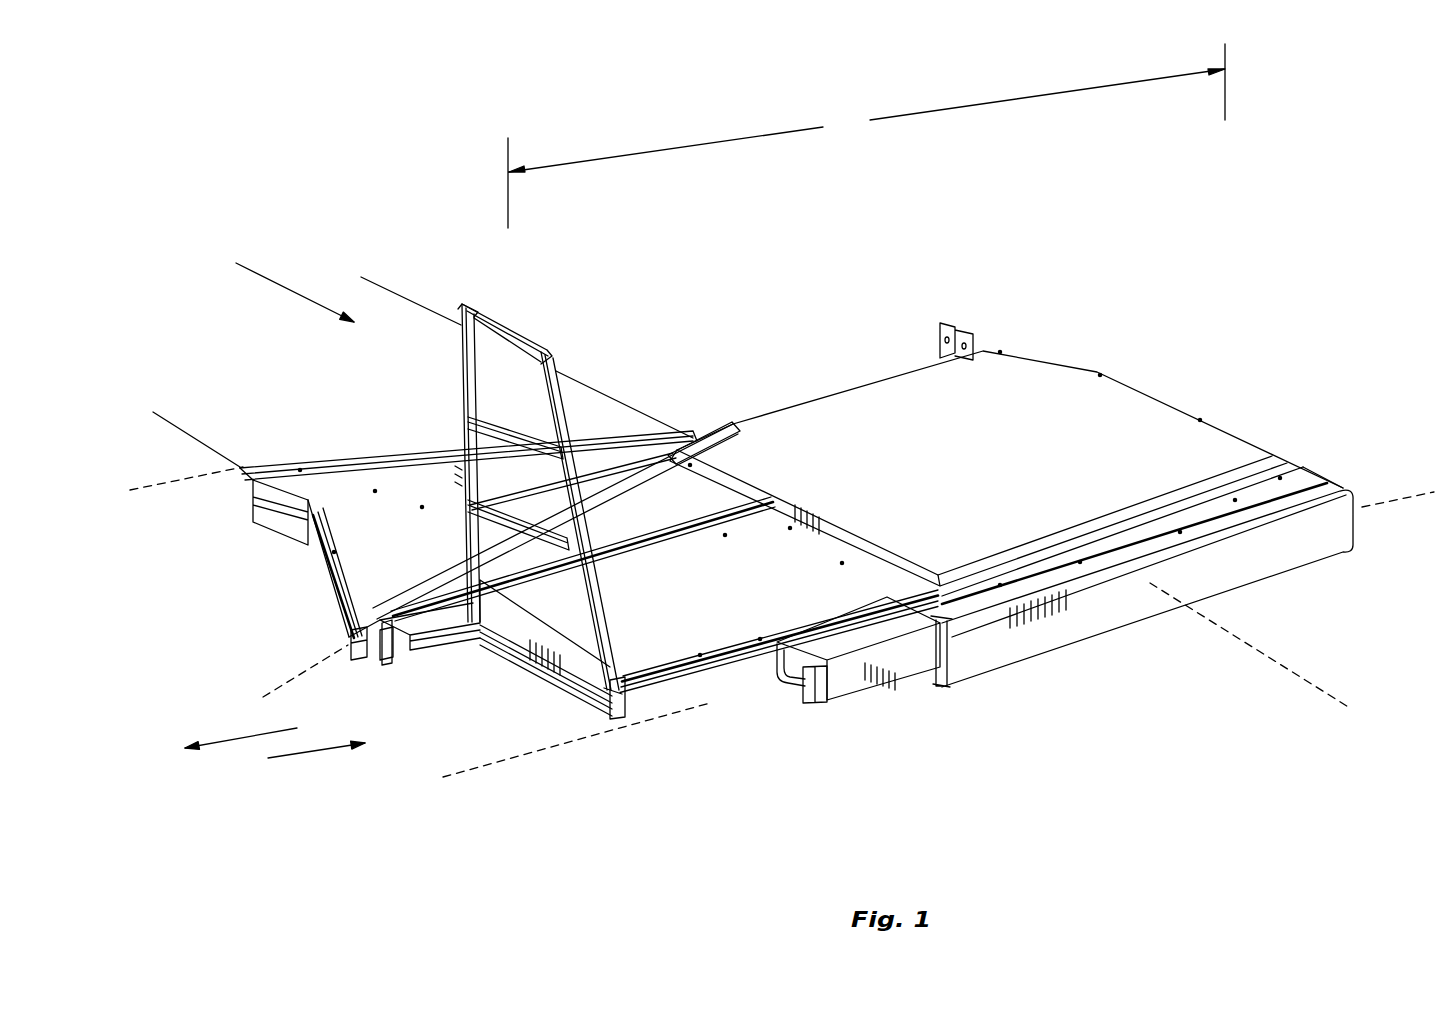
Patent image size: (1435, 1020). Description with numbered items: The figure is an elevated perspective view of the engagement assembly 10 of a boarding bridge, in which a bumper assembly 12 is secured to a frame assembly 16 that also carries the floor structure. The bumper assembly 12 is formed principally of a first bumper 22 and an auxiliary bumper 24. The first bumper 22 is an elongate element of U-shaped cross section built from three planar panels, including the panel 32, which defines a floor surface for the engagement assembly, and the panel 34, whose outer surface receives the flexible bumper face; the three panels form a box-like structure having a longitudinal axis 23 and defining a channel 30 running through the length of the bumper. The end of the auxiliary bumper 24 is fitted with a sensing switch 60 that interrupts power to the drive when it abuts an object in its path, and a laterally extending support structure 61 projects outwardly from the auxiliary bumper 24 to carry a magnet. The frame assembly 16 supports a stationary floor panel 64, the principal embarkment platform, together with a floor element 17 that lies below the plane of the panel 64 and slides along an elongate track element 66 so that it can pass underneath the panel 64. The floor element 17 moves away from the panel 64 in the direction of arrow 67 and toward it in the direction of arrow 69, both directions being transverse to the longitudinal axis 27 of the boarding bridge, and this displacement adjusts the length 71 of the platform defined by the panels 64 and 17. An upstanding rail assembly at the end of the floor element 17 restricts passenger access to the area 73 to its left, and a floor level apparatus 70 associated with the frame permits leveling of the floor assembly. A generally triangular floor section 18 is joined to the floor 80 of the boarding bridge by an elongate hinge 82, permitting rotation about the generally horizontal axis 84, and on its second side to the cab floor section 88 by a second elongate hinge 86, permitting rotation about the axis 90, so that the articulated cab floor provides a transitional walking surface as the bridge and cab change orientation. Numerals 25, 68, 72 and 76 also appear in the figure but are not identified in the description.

The engagement assembly 10 is at (782, 516).
The bumper assembly 12 is at (907, 613).
The frame assembly 16 is at (423, 580).
The floor element 17 is at (810, 553).
The floor section 18 is at (627, 453).
The first bumper 22 is at (1070, 643).
The longitudinal axis 23 is at (630, 728).
The auxiliary bumper 24 is at (873, 702).
The transverse axis 25 is at (1307, 683).
The longitudinal axis of the boarding bridge 27 is at (278, 284).
The channel 30 is at (932, 685).
The planar element 32 is at (1327, 492).
The panel 34 is at (1348, 530).
The sensing switch 60 is at (807, 717).
The laterally extending support structure 61 is at (757, 663).
The stationary floor panel 64 is at (1048, 475).
The track element 66 is at (433, 654).
The directional arrow 67 is at (215, 740).
The lower rail 68 is at (497, 658).
The directional arrow 69 is at (300, 757).
The floor level apparatus 70 is at (958, 305).
The length 71 is at (866, 136).
The longitudinal rail 72 is at (578, 702).
The area 73 is at (477, 755).
The headboard frame 76 is at (536, 310).
The floor of the boarding bridge 80 is at (257, 405).
The elongate hinge 82 is at (375, 453).
The horizontal axis 84 is at (163, 483).
The elongate hinge 86 is at (617, 503).
The cab floor section 88 is at (690, 483).
The axis 90 is at (320, 660).